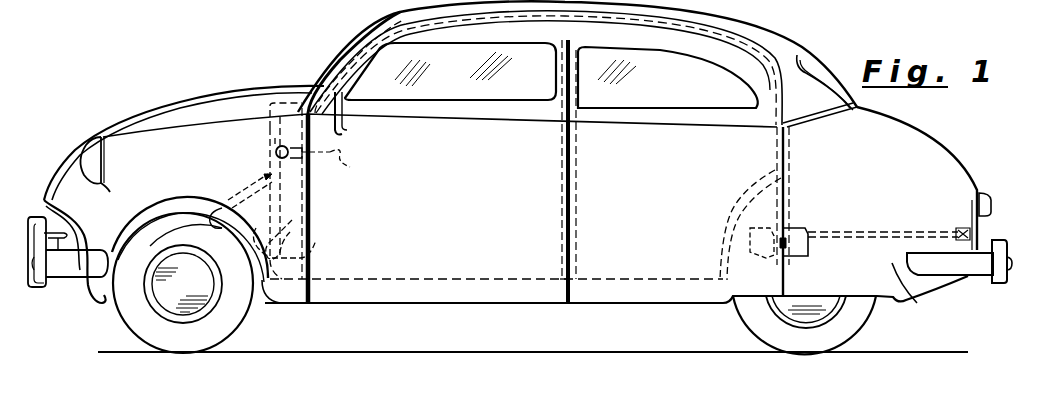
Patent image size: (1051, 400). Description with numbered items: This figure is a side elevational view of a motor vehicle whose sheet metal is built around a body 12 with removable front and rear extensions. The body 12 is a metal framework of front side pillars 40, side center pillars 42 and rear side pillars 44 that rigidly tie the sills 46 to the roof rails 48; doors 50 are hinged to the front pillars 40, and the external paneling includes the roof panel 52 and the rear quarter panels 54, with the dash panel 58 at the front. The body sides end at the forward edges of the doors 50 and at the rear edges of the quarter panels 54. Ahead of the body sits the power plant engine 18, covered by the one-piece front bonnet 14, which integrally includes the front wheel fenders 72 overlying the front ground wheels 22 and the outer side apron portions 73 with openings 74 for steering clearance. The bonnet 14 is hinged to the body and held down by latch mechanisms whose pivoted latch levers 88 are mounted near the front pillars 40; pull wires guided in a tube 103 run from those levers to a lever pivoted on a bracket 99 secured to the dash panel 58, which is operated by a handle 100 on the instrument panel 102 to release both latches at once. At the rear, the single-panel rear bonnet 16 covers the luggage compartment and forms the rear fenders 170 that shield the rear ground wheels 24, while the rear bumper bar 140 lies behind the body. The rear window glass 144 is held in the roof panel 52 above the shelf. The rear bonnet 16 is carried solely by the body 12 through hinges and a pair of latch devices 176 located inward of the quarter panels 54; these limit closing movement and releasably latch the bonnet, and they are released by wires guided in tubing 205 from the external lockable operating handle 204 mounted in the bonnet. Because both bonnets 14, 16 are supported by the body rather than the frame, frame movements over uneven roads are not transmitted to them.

The body 12 is at (336, 4).
The front bonnet 14 is at (173, 95).
The rear bonnet 16 is at (940, 142).
The power plant engine 18 is at (587, 56).
The front ground wheels 22 is at (128, 318).
The rear ground wheels 24 is at (752, 318).
The front side pillars 40 is at (316, 240).
The side center pillars 42 is at (575, 235).
The rear side pillars 44 is at (728, 206).
The sills 46 is at (494, 272).
The roof rails 48 is at (608, 34).
The doors 50 is at (408, 0).
The roof panel 52 is at (752, 48).
The rear quarter panels 54 is at (736, 0).
The dash panel 58 is at (268, 132).
The front wheel fenders 72 is at (160, 215).
The outer side apron portions 73 is at (212, 218).
The openings 74 is at (180, 209).
The latch lever 88 is at (310, 202).
The bracket 99 is at (272, 146).
The handle 100 is at (350, 167).
The instrument panel 102 is at (350, 127).
The tube 103 is at (260, 216).
The rear bumper bar 140 is at (978, 272).
The rear window glass 144 is at (812, 64).
The rear fenders 170 is at (913, 293).
The latch devices 176 is at (800, 222).
The external lockable operating handle 204 is at (985, 230).
The tubing 205 is at (878, 226).